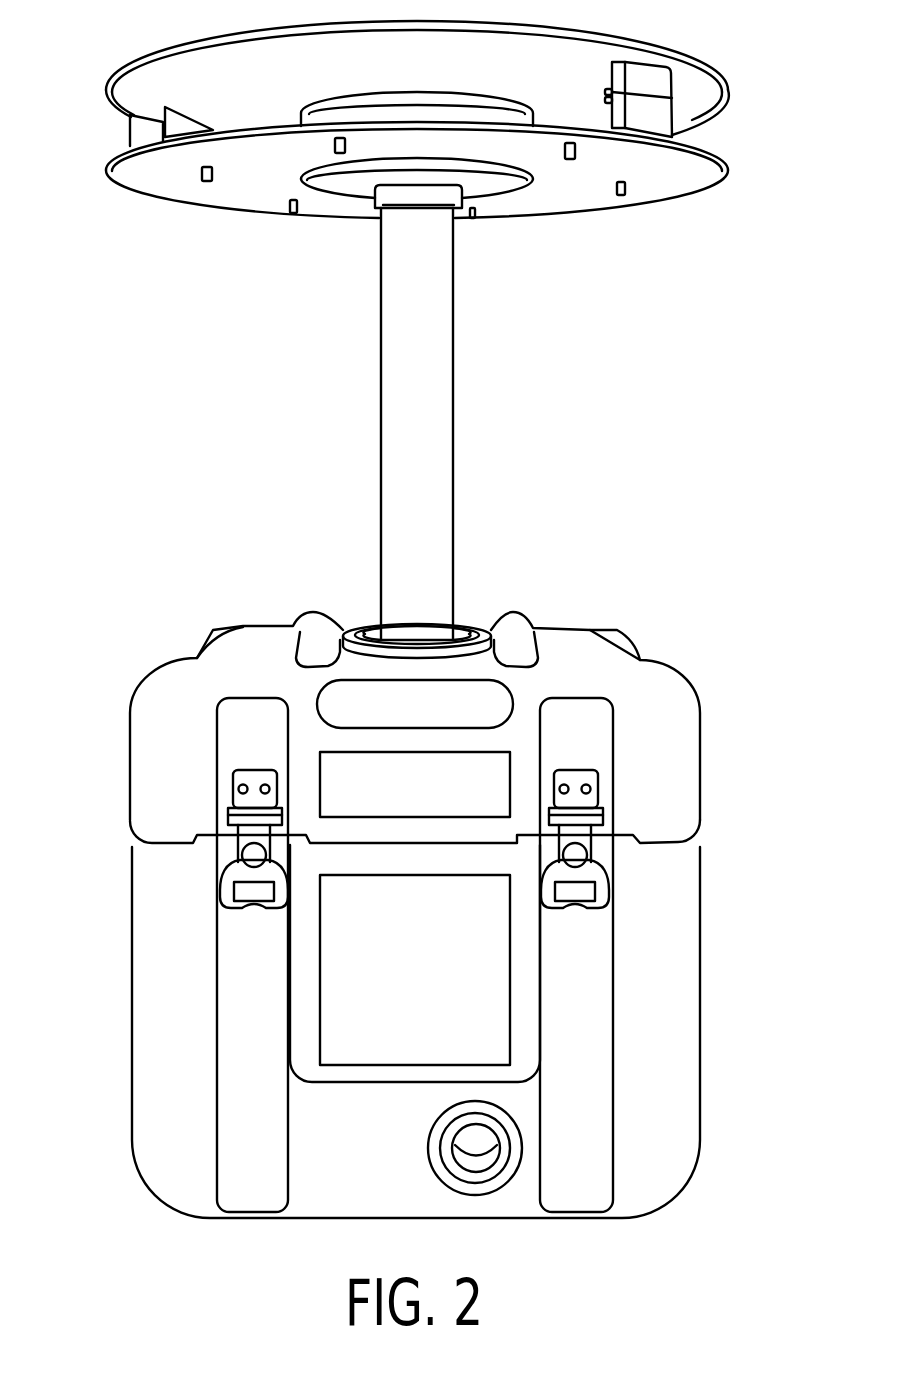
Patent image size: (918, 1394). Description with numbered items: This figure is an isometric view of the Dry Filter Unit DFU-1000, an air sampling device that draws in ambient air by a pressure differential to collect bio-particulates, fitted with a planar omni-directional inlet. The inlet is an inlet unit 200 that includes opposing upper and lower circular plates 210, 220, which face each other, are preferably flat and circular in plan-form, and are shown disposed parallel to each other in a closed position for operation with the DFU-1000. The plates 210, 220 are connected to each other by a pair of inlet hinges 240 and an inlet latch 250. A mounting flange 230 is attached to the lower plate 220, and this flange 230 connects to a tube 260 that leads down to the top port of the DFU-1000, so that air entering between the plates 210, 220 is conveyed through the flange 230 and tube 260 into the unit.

The inlet unit 200 is at (433, 321).
The upper circular plate 210 is at (593, 33).
The lower circular plate 220 is at (607, 211).
The mounting flange 230 is at (333, 207).
The inlet hinge 240 is at (660, 112).
The inlet latch 250 is at (130, 142).
The tube 260 is at (381, 390).
The Dry Filter Unit DFU-1000 is at (566, 638).